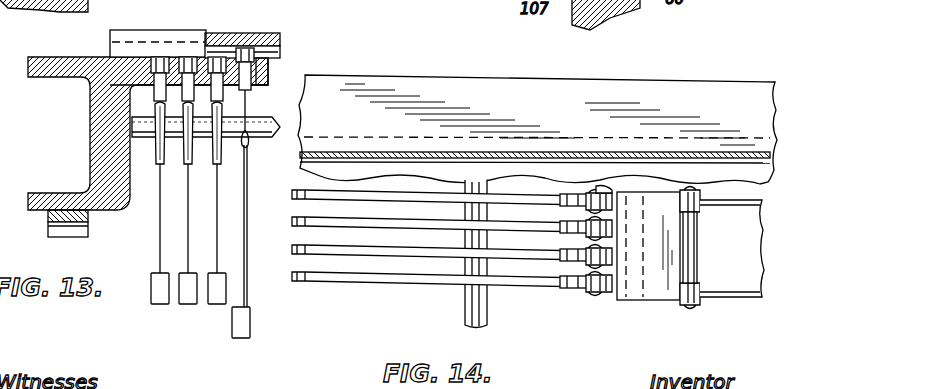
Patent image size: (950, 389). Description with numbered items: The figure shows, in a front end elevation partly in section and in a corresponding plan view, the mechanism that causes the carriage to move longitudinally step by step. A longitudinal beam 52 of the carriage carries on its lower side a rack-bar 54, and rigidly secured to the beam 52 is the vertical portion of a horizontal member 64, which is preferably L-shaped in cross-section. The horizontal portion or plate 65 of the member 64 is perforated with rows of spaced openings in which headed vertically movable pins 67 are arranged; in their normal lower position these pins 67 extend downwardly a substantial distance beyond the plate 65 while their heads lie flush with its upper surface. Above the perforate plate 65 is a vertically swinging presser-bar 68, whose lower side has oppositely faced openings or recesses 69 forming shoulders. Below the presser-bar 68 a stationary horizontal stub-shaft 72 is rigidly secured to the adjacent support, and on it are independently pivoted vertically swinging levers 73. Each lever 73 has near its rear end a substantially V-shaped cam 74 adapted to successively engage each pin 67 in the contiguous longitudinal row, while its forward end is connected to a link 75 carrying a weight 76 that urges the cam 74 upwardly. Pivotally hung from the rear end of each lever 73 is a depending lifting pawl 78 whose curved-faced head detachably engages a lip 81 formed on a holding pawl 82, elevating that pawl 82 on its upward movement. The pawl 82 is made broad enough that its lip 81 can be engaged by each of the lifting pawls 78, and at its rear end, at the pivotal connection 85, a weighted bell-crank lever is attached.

In FIG. 13, the longitudinal beam 52 is at (90, 107).
In FIG. 13, the rack-bar 54 is at (50, 218).
In FIG. 13, the horizontal plate or member 64 is at (270, 82).
In FIG. 14, the horizontal plate or member 64 is at (293, 167).
In FIG. 13, the horizontal portion or plate 65 is at (275, 70).
In FIG. 13, the headed vertical movable pin 67 is at (214, 62).
In FIG. 13, the presser-bar 68 is at (268, 33).
In FIG. 13, the openings or recesses 69 is at (281, 58).
In FIG. 14, the stationary horizontal stub-shaft 72 is at (484, 305).
In FIG. 14, the lever 73 is at (391, 282).
In FIG. 14, the V-shaped portion or cam 74 is at (549, 290).
In FIG. 13, the link 75 is at (247, 272).
In FIG. 13, the weight 76 is at (231, 322).
In FIG. 14, the depending lifting pawl 78 is at (606, 190).
In FIG. 14, the lip or extension 81 is at (614, 303).
In FIG. 14, the holding pawl 82 is at (655, 294).
In FIG. 14, the pivotal connection 85 is at (698, 305).